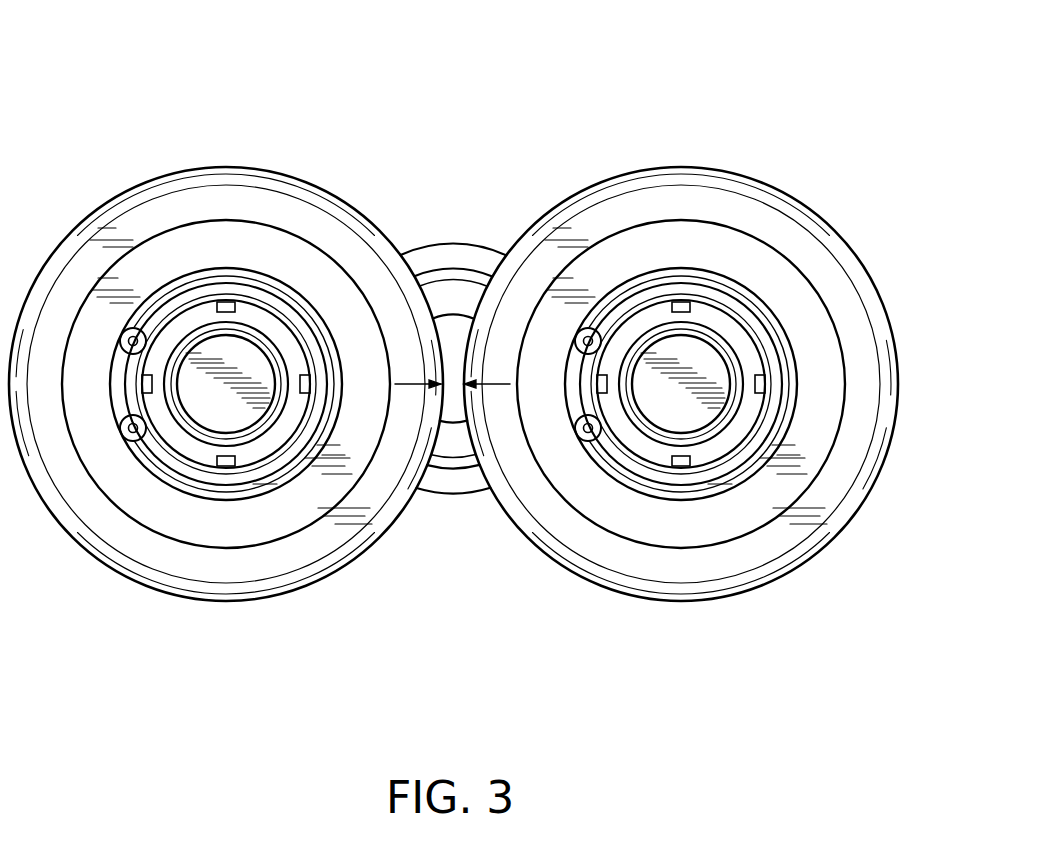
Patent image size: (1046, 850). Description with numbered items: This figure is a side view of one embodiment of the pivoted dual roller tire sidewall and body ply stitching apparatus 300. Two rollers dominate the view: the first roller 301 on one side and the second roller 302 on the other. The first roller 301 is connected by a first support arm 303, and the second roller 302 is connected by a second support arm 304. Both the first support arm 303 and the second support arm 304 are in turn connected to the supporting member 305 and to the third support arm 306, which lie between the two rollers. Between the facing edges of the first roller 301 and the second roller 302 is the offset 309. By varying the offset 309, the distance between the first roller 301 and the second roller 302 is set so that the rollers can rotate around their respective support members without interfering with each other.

The pivoted dual roller tire sidewall and body ply stitching apparatus 300 is at (779, 133).
The first roller 301 is at (835, 487).
The second roller 302 is at (226, 562).
The first support arm 303 is at (687, 415).
The second support arm 304 is at (205, 372).
The supporting member 305 is at (477, 253).
The third support arm 306 is at (450, 410).
The offset 309 is at (450, 387).